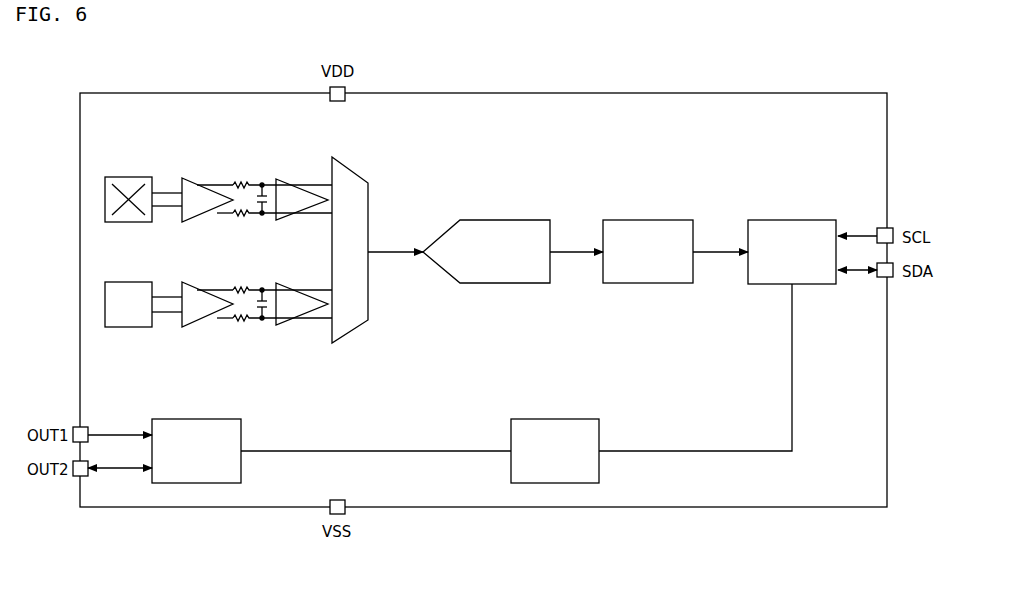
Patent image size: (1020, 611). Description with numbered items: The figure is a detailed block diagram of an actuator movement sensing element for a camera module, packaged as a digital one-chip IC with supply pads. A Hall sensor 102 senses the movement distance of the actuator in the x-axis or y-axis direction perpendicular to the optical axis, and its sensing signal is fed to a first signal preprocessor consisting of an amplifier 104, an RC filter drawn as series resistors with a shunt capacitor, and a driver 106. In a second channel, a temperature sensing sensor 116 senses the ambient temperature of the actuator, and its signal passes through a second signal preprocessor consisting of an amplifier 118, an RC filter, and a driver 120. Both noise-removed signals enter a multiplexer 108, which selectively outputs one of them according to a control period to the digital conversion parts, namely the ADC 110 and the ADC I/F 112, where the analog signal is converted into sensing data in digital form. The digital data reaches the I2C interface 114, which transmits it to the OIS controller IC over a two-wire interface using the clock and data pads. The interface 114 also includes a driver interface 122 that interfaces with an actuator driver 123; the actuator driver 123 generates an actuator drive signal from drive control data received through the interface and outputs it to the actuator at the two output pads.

The Hall sensor 102 is at (130, 177).
The amplifier 104 is at (193, 181).
The driver 106 is at (290, 181).
The multiplexer 108 is at (355, 172).
The ADC 110 is at (505, 283).
The ADC interface 112 is at (648, 283).
The interface 114 is at (815, 284).
The temperature sensing sensor 116 is at (130, 327).
The amplifier 118 is at (193, 324).
The driver 120 is at (290, 324).
The driver interface 122 is at (599, 432).
The actuator driver 123 is at (241, 432).